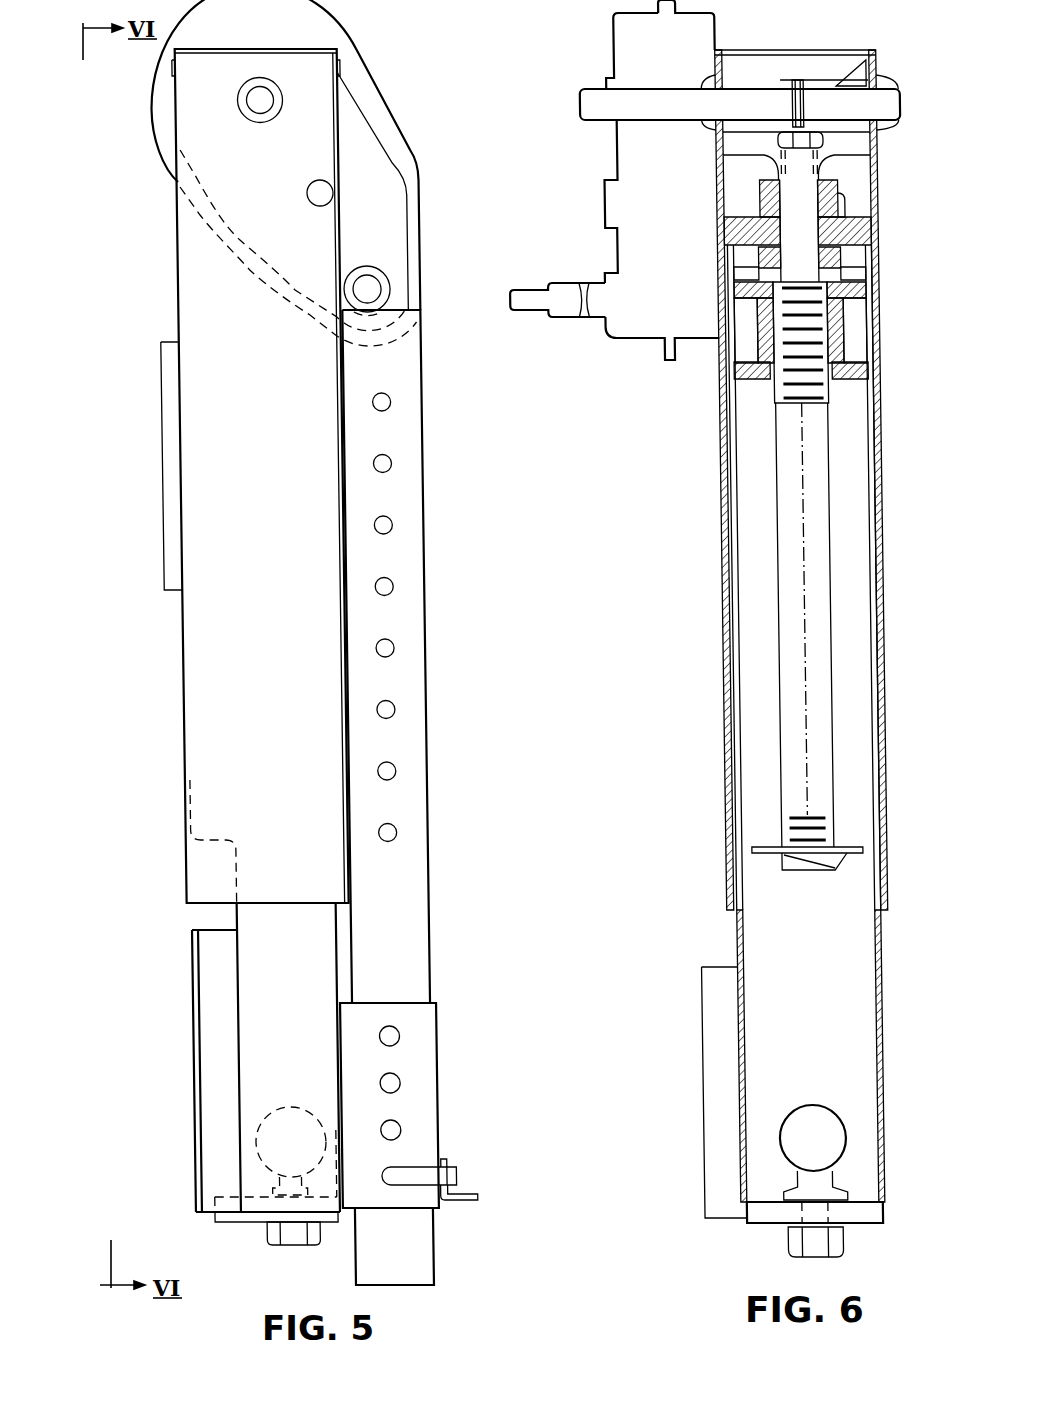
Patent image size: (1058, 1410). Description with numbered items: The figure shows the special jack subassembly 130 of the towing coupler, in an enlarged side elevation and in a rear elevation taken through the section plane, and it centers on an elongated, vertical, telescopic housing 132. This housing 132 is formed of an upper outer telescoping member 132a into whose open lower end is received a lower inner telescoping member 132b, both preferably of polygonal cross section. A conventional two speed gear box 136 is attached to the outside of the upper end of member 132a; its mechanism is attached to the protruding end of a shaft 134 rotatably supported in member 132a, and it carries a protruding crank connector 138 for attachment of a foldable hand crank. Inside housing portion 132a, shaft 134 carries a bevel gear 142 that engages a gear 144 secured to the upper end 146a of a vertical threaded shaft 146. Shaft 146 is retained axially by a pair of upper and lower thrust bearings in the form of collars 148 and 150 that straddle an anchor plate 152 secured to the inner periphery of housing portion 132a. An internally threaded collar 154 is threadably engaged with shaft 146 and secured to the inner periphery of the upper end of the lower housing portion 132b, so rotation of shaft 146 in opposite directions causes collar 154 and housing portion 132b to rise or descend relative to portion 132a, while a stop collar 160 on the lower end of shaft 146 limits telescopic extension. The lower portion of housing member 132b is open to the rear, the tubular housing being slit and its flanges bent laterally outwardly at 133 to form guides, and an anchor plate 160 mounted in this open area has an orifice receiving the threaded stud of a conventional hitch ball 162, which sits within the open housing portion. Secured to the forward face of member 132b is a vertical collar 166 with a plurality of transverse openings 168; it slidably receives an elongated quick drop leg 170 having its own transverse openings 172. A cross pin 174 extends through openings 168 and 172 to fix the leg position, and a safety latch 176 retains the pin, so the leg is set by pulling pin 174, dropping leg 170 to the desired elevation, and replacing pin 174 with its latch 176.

In FIG. 5, the jack subassembly 130 is at (388, 80).
In FIG. 6, the telescopic housing 132 is at (887, 663).
In FIG. 5, the upper outer telescoping member 132a is at (285, 727).
In FIG. 6, the upper outer telescoping member 132a is at (885, 523).
In FIG. 5, the lower inner telescoping member 132b is at (304, 987).
In FIG. 6, the lower inner telescoping member 132b is at (883, 948).
In FIG. 5, the laterally bent flanges 133 is at (196, 1050).
In FIG. 6, the shaft 134 is at (857, 103).
In FIG. 6, the two speed gear box 136 is at (622, 47).
In FIG. 6, the crank connector 138 is at (565, 288).
In FIG. 6, the bevel gear 142 is at (853, 80).
In FIG. 6, the gear 144 is at (857, 152).
In FIG. 6, the vertical threaded shaft 146 is at (815, 433).
In FIG. 6, the upper end of threaded shaft 146a is at (807, 208).
In FIG. 6, the upper thrust bearing collar 148 is at (760, 200).
In FIG. 6, the lower thrust bearing collar 150 is at (757, 257).
In FIG. 6, the anchor plate 152 is at (880, 228).
In FIG. 6, the internally threaded collar 154 is at (837, 320).
In FIG. 6, the stop collar / anchor plate 160 is at (768, 847).
In FIG. 5, the hitch ball 162 is at (250, 1147).
In FIG. 6, the hitch ball 162 is at (828, 1125).
In FIG. 5, the vertical collar 166 is at (433, 1022).
In FIG. 5, the transverse openings 168 is at (400, 1127).
In FIG. 5, the quick drop leg 170 is at (412, 905).
In FIG. 5, the transverse openings 172 is at (392, 769).
In FIG. 5, the cross pin 174 is at (440, 1170).
In FIG. 5, the safety latch 176 is at (468, 1192).